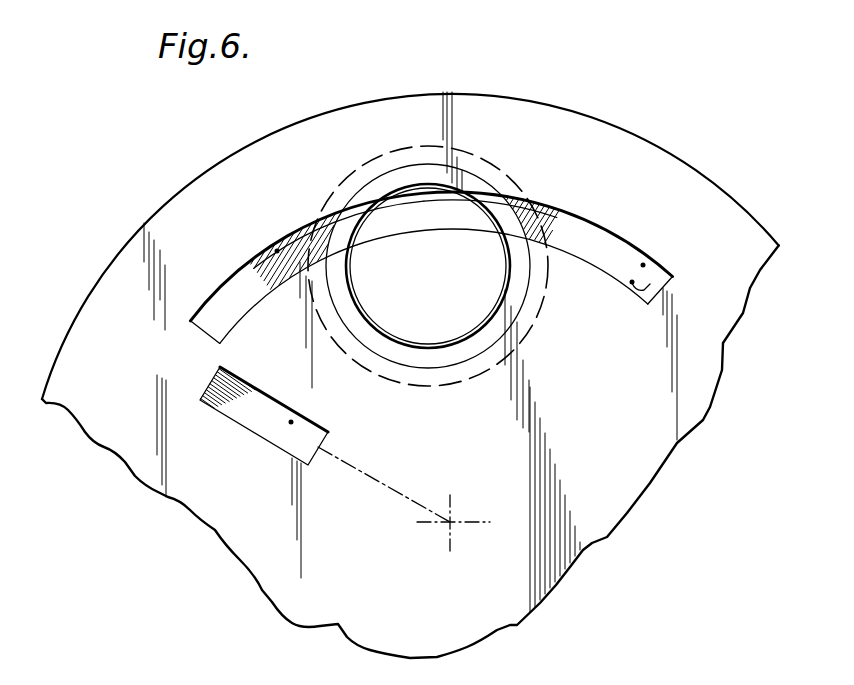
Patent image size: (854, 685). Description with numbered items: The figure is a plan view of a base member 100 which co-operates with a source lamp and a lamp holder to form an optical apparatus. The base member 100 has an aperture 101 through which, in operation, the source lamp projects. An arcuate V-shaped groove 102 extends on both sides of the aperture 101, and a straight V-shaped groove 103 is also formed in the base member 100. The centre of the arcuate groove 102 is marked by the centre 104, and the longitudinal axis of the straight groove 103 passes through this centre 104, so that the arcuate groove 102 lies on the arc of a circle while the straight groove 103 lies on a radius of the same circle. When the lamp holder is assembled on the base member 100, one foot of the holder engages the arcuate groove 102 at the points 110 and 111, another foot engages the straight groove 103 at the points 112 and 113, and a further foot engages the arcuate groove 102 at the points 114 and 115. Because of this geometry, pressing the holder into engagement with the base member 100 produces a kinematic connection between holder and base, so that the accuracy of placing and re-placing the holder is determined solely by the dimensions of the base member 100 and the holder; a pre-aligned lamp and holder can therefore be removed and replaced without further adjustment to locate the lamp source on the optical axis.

The base member 100 is at (556, 602).
The aperture 101 is at (443, 204).
The arcuate V-shaped groove 102 is at (207, 300).
The straight V-shaped groove 103 is at (222, 412).
The centre of the arcuate groove 104 is at (450, 522).
The point of engagement 110 is at (643, 264).
The point of engagement 111 is at (645, 287).
The point of engagement 112 is at (278, 437).
The point of engagement 113 is at (293, 422).
The point of engagement 114 is at (276, 250).
The point of engagement 115 is at (286, 271).